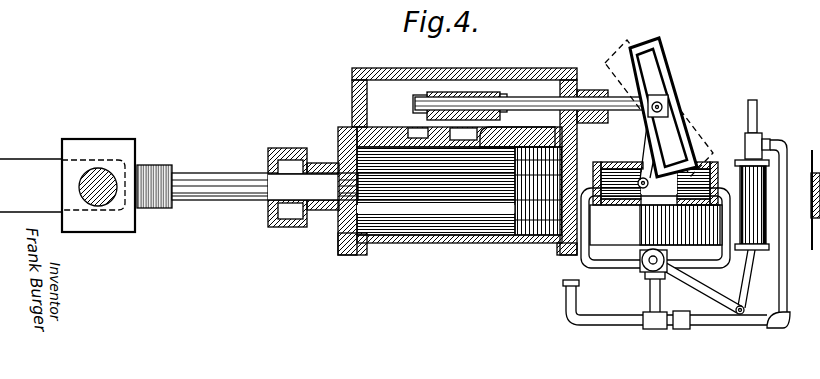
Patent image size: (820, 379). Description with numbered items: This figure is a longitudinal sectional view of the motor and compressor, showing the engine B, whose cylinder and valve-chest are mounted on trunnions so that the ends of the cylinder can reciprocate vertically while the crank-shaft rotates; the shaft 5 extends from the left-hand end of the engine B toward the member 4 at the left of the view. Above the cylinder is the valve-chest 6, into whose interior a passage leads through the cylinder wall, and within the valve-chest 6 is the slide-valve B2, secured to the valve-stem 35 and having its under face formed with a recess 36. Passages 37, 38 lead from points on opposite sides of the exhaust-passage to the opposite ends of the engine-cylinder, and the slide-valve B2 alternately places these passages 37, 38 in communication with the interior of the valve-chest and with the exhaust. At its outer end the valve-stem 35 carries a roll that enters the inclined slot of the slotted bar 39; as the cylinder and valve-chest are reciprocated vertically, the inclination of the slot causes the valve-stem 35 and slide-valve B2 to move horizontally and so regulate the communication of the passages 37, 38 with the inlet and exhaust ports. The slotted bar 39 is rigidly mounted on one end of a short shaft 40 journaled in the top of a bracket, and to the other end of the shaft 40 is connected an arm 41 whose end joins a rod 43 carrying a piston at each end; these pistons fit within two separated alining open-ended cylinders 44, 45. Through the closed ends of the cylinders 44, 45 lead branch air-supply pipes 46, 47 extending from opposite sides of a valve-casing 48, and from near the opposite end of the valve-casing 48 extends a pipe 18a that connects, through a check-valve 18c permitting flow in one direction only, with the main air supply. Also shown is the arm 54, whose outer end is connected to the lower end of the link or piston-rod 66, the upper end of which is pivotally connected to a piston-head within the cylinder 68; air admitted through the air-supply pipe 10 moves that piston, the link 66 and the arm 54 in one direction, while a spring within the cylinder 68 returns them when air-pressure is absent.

The arm 4 is at (67, 185).
The shaft 5 is at (247, 181).
The engine B is at (455, 244).
The passage 37 is at (383, 133).
The valve-chest 6 is at (416, 95).
The slide-valve B2 is at (455, 92).
The recess 36 is at (470, 118).
The passage 38 is at (512, 128).
The valve-stem 35 is at (538, 98).
The slotted bar 39 is at (659, 107).
The short shaft 40 is at (669, 106).
The arm 41 is at (676, 147).
The cylinder 44 is at (622, 167).
The rod 43 is at (660, 185).
The cylinder 45 is at (744, 193).
The air-supply pipe 10 is at (757, 110).
The cylinder 68 is at (777, 169).
The branch air-supply pipe 46 is at (610, 263).
The branch air-supply pipe 47 is at (719, 262).
The valve-casing 48 is at (650, 273).
The arm 54 is at (700, 292).
The link or piston-rod 66 is at (746, 282).
The pipe 18a is at (652, 304).
The check-valve 18c is at (689, 329).